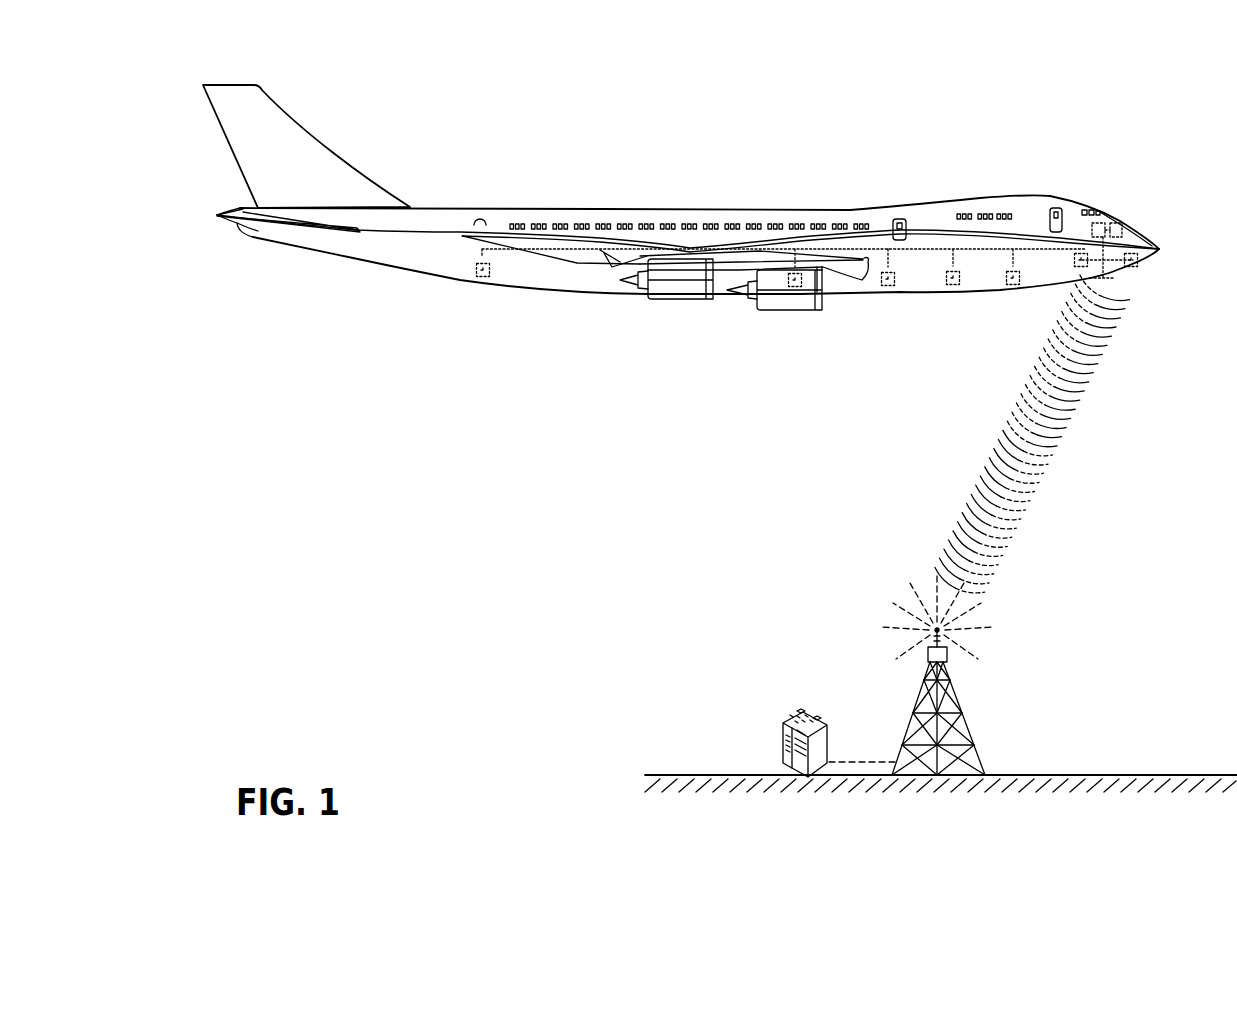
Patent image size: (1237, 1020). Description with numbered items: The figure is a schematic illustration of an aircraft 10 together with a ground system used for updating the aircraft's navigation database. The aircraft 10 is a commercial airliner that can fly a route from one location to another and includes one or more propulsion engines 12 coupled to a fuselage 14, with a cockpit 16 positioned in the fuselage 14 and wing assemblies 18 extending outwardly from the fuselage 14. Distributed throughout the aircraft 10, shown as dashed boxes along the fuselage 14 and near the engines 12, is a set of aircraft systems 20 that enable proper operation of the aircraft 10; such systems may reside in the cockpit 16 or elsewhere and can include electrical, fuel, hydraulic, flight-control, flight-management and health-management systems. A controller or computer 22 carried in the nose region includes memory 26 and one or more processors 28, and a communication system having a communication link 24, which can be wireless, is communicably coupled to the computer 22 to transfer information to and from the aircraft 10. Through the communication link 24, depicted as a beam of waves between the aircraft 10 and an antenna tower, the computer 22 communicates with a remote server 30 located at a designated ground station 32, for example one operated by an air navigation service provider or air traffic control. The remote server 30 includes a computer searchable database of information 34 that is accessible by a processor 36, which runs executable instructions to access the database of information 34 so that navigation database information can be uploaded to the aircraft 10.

The aircraft 10 is at (704, 231).
The propulsion engine 12 is at (687, 300).
The fuselage 14 is at (922, 206).
The cockpit 16 is at (1126, 222).
The wing assembly 18 is at (610, 268).
The aircraft system 20 is at (485, 283).
The computer 22 is at (1128, 236).
The communication link 24 is at (1108, 279).
The memory 26 is at (1100, 222).
The processor 28 is at (1128, 224).
The remote server 30 is at (811, 714).
The ground station 32 is at (966, 697).
The computer searchable database of information 34 is at (805, 711).
The processor 36 is at (819, 716).